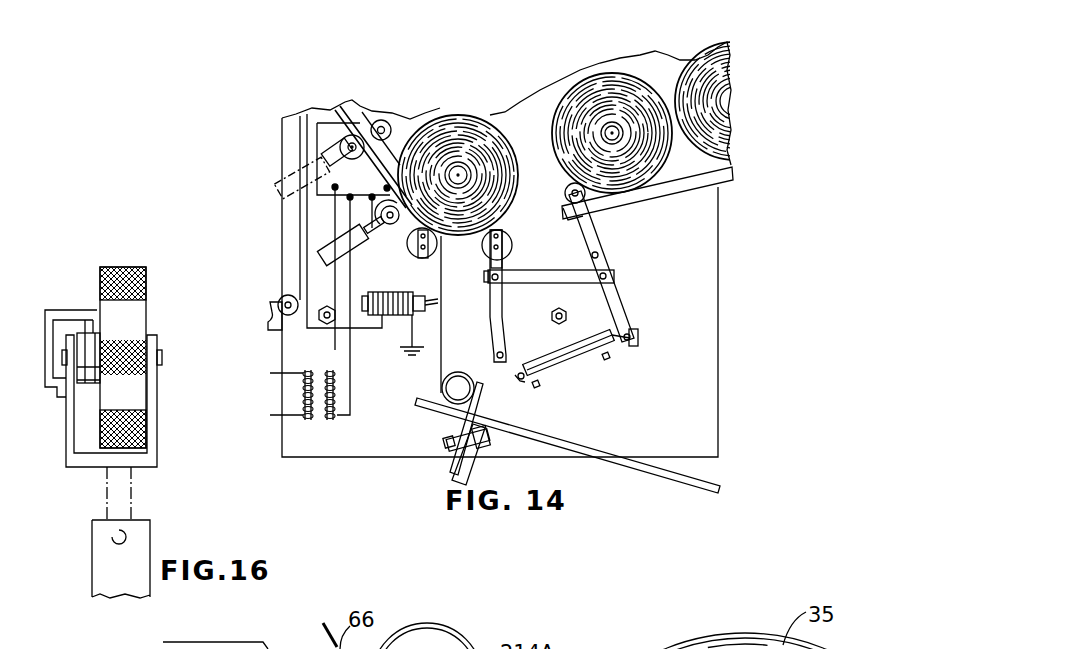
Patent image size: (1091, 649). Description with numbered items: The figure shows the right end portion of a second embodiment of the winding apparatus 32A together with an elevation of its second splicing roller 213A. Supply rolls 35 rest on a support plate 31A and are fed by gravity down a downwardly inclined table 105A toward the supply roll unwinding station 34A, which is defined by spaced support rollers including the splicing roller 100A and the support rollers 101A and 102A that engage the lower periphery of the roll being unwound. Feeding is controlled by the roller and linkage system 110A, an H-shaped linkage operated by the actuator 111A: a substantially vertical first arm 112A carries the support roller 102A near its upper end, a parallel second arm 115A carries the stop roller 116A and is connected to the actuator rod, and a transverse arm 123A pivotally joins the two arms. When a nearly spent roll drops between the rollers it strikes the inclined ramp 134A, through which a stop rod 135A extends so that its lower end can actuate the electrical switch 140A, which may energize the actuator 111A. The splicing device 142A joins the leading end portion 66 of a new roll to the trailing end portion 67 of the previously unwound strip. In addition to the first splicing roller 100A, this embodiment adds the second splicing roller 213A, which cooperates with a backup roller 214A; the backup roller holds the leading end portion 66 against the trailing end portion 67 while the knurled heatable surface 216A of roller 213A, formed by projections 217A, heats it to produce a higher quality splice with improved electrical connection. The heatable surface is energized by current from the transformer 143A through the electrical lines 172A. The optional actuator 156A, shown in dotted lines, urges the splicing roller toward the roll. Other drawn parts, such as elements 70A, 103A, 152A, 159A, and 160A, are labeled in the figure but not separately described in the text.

In FIG. 14, the support plate 31A is at (720, 395).
In FIG. 14, the winding apparatus 32A is at (322, 70).
In FIG. 14, the supply roll unwinding station 34A is at (460, 262).
In FIG. 14, the supply roll 35 is at (470, 120).
In FIG. 14, the leading end portion 66 is at (350, 106).
In FIG. 14, the trailing end portion 67 is at (382, 171).
In FIG. 14, the guide roller 70A is at (285, 296).
In FIG. 14, the splicing roller 100A is at (366, 241).
In FIG. 14, the support roller 101A is at (441, 226).
In FIG. 14, the support roller 102A is at (503, 250).
In FIG. 14, the sensor 103A is at (414, 267).
In FIG. 14, the inclined table 105A is at (662, 192).
In FIG. 14, the roller and linkage system 110A is at (646, 347).
In FIG. 14, the actuator 111A is at (585, 367).
In FIG. 14, the first arm 112A is at (503, 333).
In FIG. 14, the second arm 115A is at (621, 302).
In FIG. 14, the stop roller 116A is at (567, 190).
In FIG. 14, the transverse arm 123A is at (576, 279).
In FIG. 14, the inclined ramp 134A is at (656, 482).
In FIG. 14, the stop rod 135A is at (475, 395).
In FIG. 14, the electrical switch 140A is at (487, 445).
In FIG. 14, the splicing device 142A is at (318, 214).
In FIG. 14, the transformer 143A is at (319, 431).
In FIG. 14, the roll support 152A is at (635, 65).
In FIG. 14, the actuator 156A is at (292, 176).
In FIG. 14, the roller 159A is at (345, 113).
In FIG. 14, the solenoid 160A is at (395, 326).
In FIG. 14, the electrical lines 172A is at (347, 353).
In FIG. 14, the second splicing roller 213A is at (362, 110).
In FIG. 16, the second splicing roller 213A is at (146, 320).
In FIG. 14, the backup roller 214A is at (384, 121).
In FIG. 16, the knurled heatable surface 216A is at (140, 267).
In FIG. 16, the projections 217A is at (120, 267).